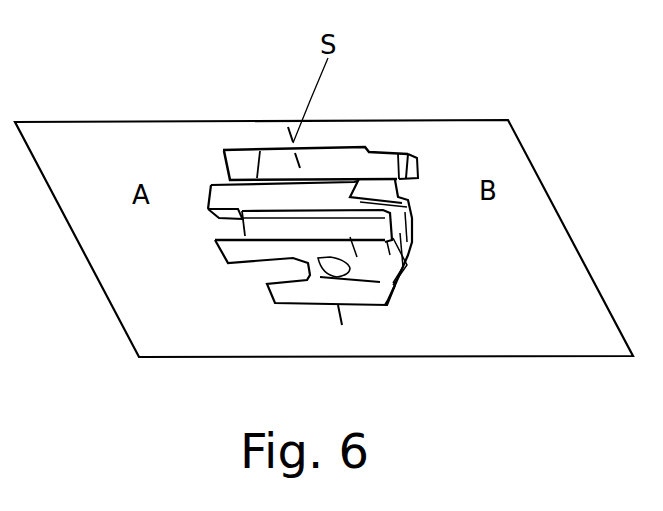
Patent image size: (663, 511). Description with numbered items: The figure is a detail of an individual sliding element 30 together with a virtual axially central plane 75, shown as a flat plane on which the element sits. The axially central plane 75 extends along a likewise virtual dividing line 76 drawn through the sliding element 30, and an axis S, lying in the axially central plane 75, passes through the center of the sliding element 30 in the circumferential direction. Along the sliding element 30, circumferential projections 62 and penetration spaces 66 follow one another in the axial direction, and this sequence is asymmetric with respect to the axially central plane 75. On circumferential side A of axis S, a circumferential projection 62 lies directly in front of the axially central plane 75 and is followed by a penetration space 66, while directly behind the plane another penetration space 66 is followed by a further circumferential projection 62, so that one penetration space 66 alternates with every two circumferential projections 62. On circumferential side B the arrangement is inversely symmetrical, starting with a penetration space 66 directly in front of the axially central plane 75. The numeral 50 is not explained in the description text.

The sliding element 30 is at (336, 168).
The top plate 50 is at (282, 168).
The circumferential projection 62 is at (238, 170).
The penetration space 66 is at (245, 173).
The axially central plane 75 is at (486, 121).
The dividing line 76 is at (378, 168).